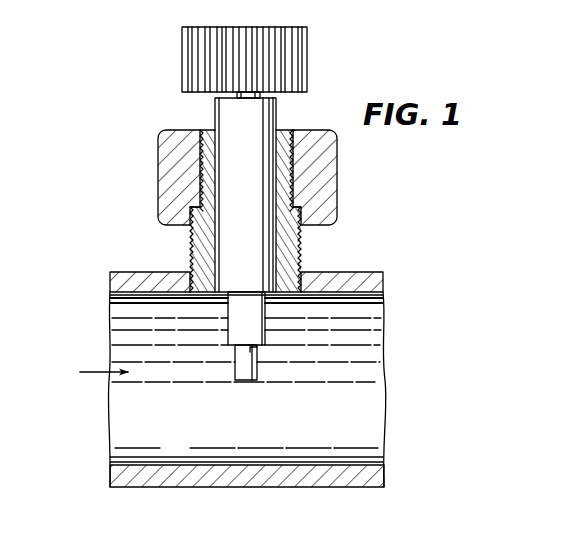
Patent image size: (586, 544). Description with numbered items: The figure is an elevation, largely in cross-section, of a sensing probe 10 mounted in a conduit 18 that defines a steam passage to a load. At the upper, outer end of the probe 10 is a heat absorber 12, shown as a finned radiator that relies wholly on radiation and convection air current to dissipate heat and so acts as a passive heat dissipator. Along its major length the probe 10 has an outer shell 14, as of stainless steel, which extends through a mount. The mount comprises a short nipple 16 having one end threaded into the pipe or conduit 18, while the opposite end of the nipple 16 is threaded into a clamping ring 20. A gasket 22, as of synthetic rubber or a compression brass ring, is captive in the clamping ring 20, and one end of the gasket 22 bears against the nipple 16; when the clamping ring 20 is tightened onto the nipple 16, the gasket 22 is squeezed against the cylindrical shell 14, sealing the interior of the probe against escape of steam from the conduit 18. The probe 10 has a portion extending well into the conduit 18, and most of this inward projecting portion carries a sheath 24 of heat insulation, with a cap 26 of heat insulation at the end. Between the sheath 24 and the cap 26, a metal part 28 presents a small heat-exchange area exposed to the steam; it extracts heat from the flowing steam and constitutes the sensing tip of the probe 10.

The probe 10 is at (292, 109).
The heat absorber 12 is at (170, 66).
The outer shell 14 is at (215, 109).
The nipple 16 is at (300, 248).
The conduit 18 is at (160, 272).
The clamping ring 20 is at (163, 173).
The gasket 22 is at (297, 184).
The sheath 24 is at (235, 331).
The cap 26 is at (236, 371).
The metal part 28 is at (257, 352).